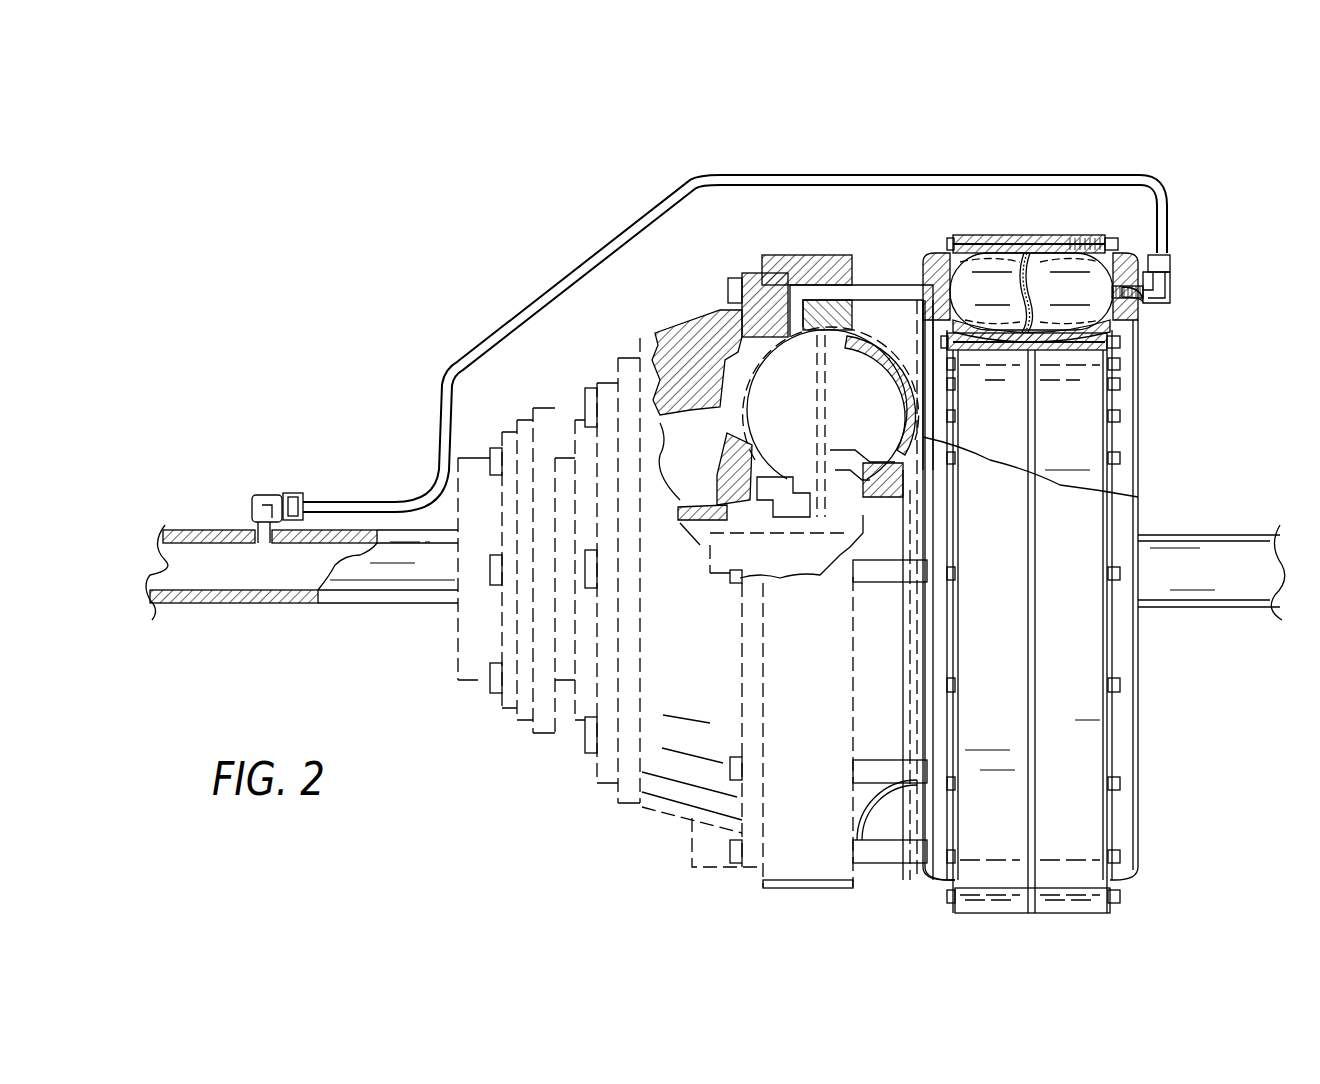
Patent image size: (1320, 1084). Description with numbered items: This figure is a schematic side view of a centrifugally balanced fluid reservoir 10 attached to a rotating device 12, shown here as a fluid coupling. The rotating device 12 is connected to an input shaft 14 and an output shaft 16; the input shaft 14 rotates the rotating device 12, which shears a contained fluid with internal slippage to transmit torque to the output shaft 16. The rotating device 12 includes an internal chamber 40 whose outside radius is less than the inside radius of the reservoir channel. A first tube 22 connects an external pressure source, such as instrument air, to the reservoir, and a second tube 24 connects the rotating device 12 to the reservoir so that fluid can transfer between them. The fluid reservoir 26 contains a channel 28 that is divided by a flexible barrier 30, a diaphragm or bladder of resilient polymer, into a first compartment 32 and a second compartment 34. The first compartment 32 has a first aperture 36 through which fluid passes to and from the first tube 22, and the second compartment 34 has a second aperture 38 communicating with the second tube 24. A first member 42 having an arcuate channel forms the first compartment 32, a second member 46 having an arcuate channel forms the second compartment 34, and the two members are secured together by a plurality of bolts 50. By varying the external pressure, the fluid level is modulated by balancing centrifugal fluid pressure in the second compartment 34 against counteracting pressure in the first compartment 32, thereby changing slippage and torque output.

The centrifugally balanced fluid reservoir 10 is at (1215, 897).
The rotating device 12 is at (545, 838).
The input shaft 14 is at (188, 530).
The output shaft 16 is at (1222, 548).
The first tube 22 is at (521, 332).
The second tube 24 is at (880, 282).
The fluid reservoir 26 is at (985, 278).
The channel 28 is at (1050, 272).
The flexible barrier 30 is at (1028, 285).
The first compartment 32 is at (1060, 272).
The second compartment 34 is at (1002, 272).
The first aperture 36 is at (1128, 267).
The second aperture 38 is at (935, 263).
The internal chamber 40 is at (803, 413).
The first member 42 is at (1085, 655).
The second member 46 is at (1005, 718).
The bolts 50 is at (1060, 348).